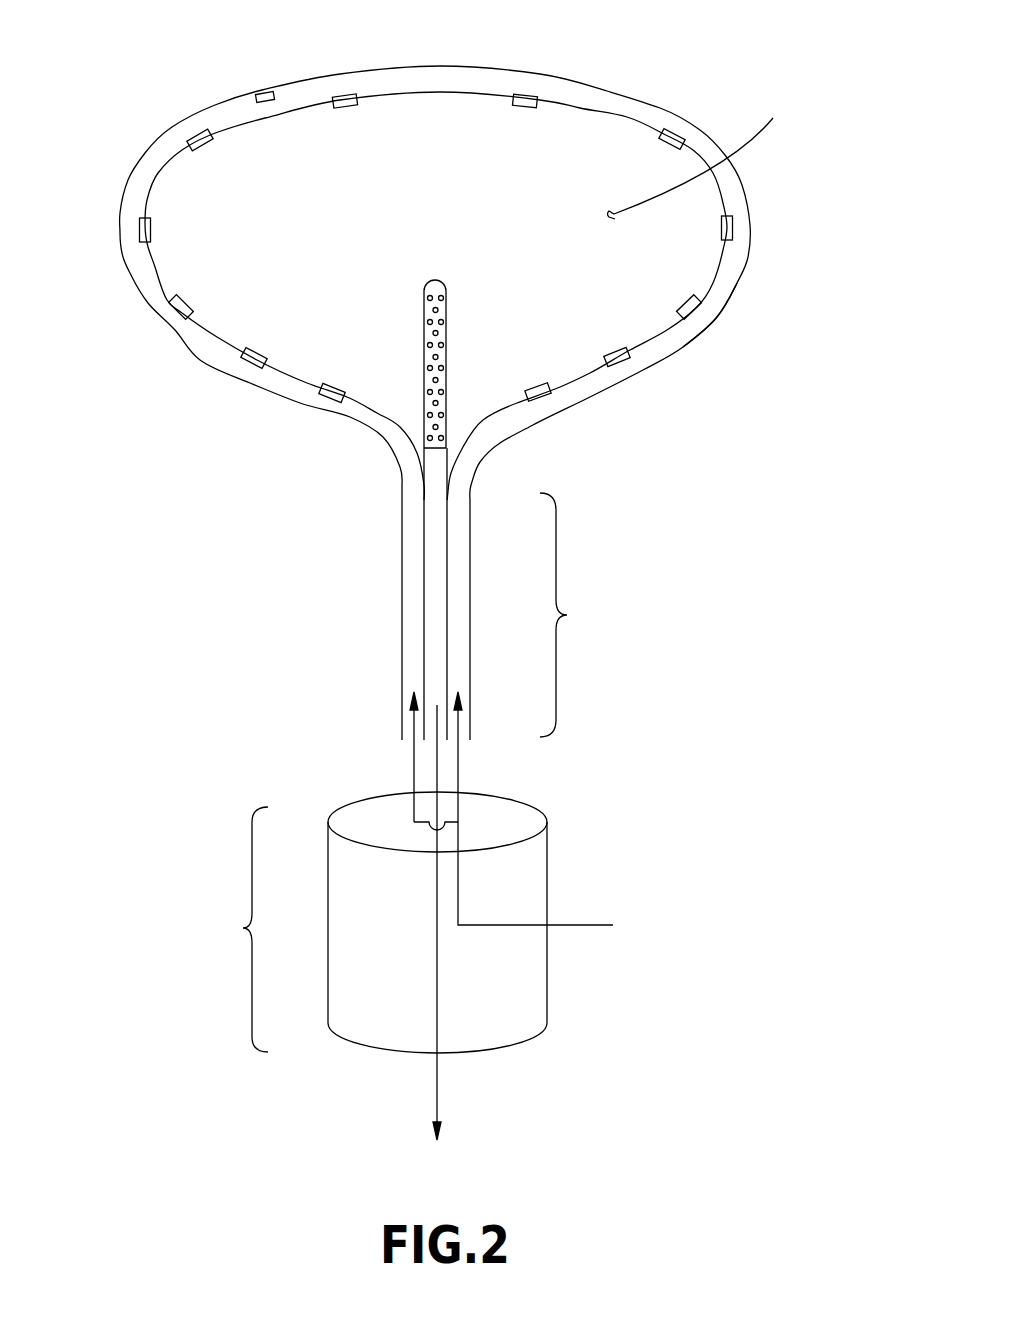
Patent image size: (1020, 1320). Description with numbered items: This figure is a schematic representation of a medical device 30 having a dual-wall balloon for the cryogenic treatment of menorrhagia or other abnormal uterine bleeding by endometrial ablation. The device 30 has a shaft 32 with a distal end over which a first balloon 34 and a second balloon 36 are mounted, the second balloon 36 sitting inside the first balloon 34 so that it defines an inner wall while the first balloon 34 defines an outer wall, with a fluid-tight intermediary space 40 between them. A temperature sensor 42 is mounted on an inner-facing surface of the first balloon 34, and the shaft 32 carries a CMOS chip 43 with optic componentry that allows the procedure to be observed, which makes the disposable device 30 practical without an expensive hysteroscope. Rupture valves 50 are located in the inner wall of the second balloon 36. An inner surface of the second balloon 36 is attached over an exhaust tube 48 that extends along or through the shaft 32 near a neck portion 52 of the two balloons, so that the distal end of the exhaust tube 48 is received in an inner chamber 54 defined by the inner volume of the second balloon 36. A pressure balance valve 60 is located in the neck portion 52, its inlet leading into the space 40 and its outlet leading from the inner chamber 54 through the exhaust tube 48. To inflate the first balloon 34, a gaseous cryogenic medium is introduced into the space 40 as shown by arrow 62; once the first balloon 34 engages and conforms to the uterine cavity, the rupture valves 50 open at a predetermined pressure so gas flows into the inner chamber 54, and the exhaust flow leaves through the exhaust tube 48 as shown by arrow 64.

The device 30 is at (463, 251).
The shaft 32 is at (448, 460).
The first balloon 34 is at (707, 325).
The second balloon 36 is at (724, 267).
The space 40 is at (452, 82).
The temperature sensor 42 is at (263, 92).
The CMOS chip 43 is at (431, 278).
The exhaust tube 48 is at (425, 347).
The rupture valves 50 is at (345, 108).
The neck portion 52 is at (576, 620).
The inner chamber 54 is at (628, 67).
The pressure balance valve 60 is at (235, 942).
The arrow 62 is at (414, 756).
The arrow 64 is at (437, 1082).